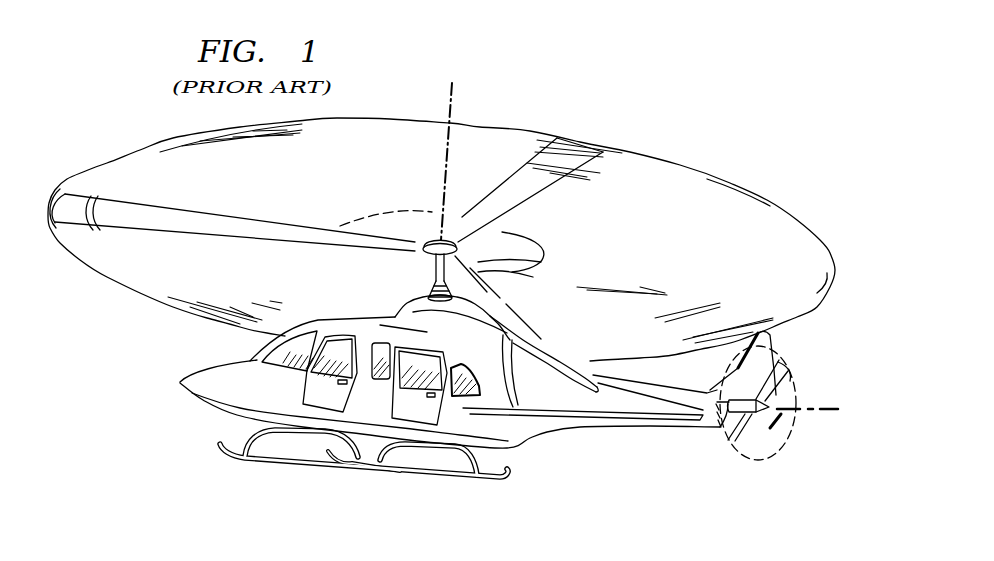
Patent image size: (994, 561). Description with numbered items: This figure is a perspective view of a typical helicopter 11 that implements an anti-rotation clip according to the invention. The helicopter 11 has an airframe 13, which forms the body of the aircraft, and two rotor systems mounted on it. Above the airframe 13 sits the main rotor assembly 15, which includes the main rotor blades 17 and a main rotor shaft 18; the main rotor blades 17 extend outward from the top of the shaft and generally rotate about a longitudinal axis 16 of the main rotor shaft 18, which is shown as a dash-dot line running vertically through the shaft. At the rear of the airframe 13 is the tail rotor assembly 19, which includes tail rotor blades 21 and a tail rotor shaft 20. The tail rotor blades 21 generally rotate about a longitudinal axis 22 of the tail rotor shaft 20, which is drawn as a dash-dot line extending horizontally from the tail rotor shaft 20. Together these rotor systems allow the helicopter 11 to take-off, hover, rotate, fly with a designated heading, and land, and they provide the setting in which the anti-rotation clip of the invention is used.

The helicopter 11 is at (604, 97).
The airframe 13 is at (207, 407).
The main rotor assembly 15 is at (491, 284).
The longitudinal axis 16 is at (451, 89).
The main rotor blades 17 is at (184, 211).
The main rotor shaft 18 is at (426, 264).
The tail rotor assembly 19 is at (774, 467).
The tail rotor shaft 20 is at (742, 445).
The tail rotor blades 21 is at (789, 374).
The longitudinal axis 22 is at (826, 412).